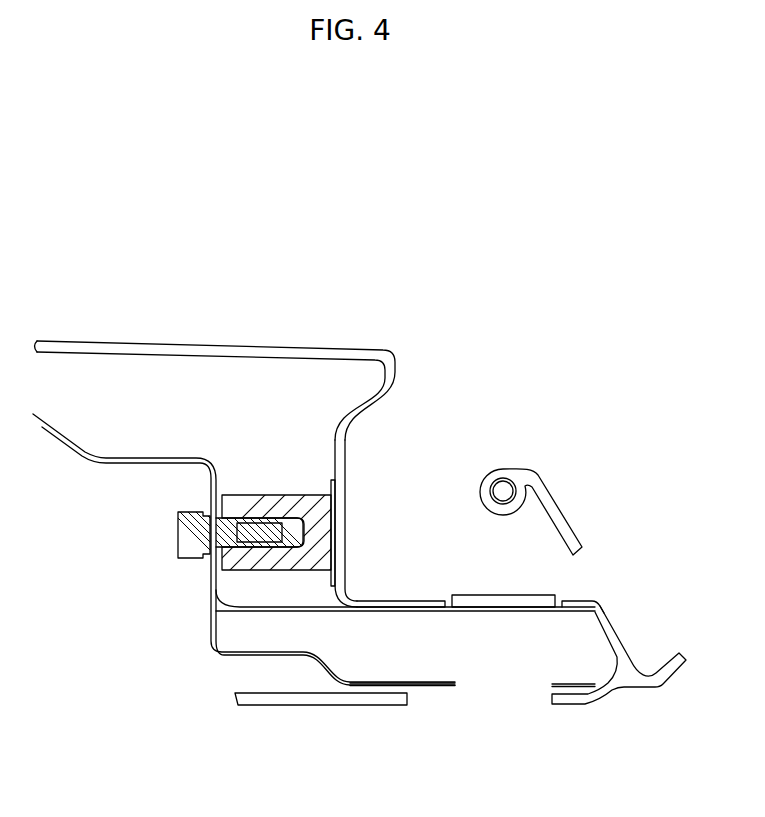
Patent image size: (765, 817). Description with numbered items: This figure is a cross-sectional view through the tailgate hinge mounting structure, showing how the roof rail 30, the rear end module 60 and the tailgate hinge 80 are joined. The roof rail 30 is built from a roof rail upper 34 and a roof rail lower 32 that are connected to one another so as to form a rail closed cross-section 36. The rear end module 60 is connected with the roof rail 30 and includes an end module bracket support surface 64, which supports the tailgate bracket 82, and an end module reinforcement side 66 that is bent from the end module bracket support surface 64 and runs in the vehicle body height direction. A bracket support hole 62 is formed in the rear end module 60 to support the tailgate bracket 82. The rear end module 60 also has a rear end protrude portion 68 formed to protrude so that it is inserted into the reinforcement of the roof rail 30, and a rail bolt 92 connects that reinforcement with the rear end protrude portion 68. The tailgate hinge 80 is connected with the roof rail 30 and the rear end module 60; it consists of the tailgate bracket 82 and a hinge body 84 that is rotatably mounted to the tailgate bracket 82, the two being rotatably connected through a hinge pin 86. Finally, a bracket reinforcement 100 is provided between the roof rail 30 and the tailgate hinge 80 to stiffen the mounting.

The roof rail 30 is at (183, 659).
The roof rail lower 32 is at (324, 658).
The roof rail upper 34 is at (263, 610).
The rail closed cross-section 36 is at (566, 650).
The rear end module 60 is at (297, 327).
The bracket support hole 62 is at (545, 600).
The end module bracket support surface 64 is at (421, 600).
The end module reinforcement side 66 is at (346, 484).
The rear end protrude portion 68 is at (285, 507).
The tailgate hinge 80 is at (573, 456).
The tailgate bracket 82 is at (479, 596).
The hinge body 84 is at (568, 527).
The hinge pin 86 is at (504, 487).
The rail bolt 92 is at (192, 534).
The bracket reinforcement 100 is at (328, 582).